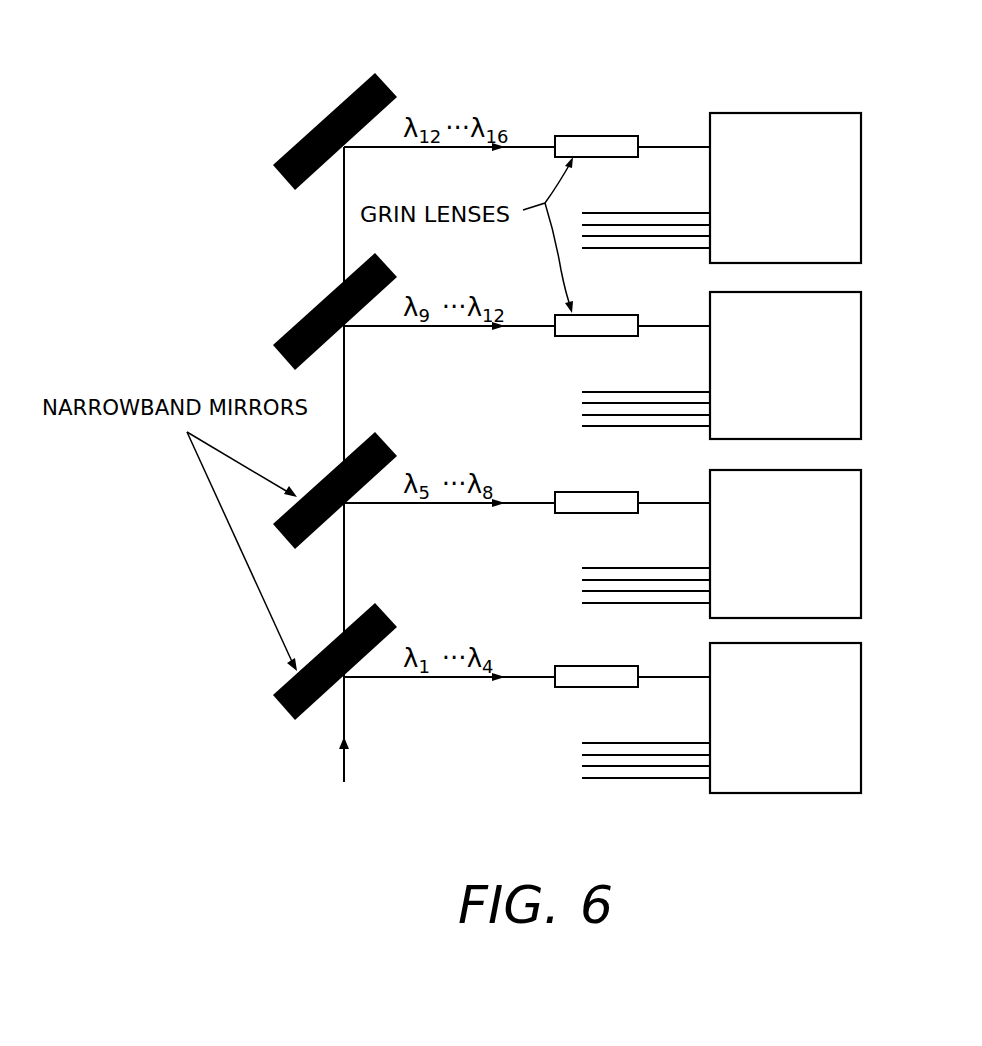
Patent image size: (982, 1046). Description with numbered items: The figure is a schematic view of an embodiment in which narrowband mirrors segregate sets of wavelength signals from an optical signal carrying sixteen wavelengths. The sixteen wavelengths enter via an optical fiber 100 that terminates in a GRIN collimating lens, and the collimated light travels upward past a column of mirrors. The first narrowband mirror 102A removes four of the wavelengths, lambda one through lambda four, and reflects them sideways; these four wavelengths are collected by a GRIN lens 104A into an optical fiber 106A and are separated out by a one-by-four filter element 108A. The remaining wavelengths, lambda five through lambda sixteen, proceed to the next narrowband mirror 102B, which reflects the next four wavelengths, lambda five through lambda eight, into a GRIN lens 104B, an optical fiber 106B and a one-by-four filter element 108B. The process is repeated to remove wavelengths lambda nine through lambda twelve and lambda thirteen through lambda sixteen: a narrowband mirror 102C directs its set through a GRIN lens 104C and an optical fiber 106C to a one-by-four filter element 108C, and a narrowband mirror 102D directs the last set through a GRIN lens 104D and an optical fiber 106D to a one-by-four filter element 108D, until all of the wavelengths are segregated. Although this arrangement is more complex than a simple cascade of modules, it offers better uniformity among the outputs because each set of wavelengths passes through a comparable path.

The optical fiber 100 is at (344, 763).
The narrowband mirror 102A is at (285, 707).
The narrowband mirror 102B is at (312, 487).
The narrowband mirror 102C is at (323, 301).
The narrowband mirror 102D is at (345, 103).
The GRIN lens 104A is at (620, 665).
The GRIN lens 104B is at (557, 494).
The GRIN lens 104C is at (600, 314).
The GRIN lens 104D is at (558, 140).
The optical fiber 106A is at (660, 676).
The optical fiber 106B is at (660, 503).
The optical fiber 106C is at (660, 325).
The optical fiber 106D is at (660, 147).
The 1×4 filter element 108A is at (845, 684).
The 1×4 filter element 108B is at (845, 511).
The 1×4 filter element 108C is at (845, 333).
The 1×4 filter element 108D is at (845, 154).